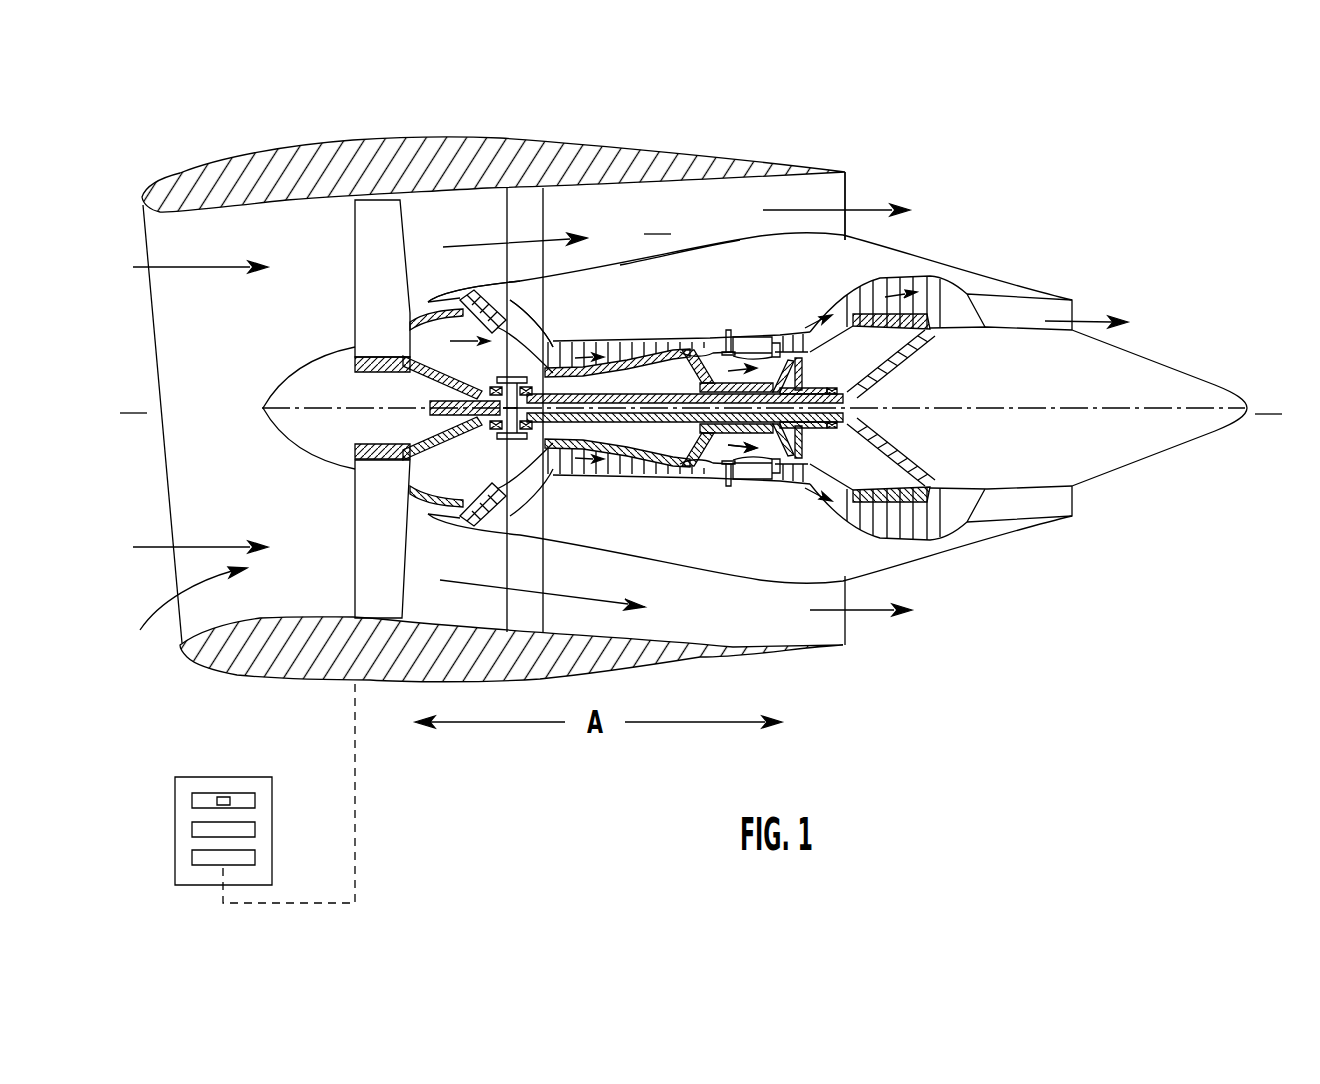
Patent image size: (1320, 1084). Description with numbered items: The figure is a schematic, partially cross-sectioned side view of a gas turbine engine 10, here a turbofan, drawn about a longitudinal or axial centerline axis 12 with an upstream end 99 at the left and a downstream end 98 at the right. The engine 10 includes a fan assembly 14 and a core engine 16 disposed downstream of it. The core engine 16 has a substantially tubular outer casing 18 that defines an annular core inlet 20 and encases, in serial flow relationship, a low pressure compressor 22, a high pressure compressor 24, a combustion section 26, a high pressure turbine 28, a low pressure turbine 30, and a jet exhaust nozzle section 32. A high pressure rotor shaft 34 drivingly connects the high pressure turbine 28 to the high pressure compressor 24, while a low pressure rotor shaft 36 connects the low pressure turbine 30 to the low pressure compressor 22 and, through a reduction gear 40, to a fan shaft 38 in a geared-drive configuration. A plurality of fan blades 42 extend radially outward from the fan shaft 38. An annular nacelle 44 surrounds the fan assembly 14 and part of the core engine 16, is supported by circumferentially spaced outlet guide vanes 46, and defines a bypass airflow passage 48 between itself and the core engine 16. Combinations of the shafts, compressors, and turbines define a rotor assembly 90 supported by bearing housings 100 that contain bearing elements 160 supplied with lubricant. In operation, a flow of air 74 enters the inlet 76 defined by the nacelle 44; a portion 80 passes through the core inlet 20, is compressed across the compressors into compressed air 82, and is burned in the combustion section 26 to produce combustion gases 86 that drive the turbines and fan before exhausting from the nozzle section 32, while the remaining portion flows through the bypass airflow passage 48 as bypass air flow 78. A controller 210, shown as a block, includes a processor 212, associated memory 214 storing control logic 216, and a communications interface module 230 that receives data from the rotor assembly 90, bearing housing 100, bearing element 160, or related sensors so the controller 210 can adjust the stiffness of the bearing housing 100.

The gas turbine engine 10 is at (984, 160).
The axial centerline axis 12 is at (1012, 405).
The fan assembly 14 is at (433, 217).
The core engine 16 is at (740, 237).
The outer casing 18 is at (701, 578).
The annular inlet 20 is at (453, 514).
The low pressure compressor 22 is at (497, 484).
The high pressure compressor 24 is at (575, 470).
The combustion section 26 is at (745, 478).
The high pressure turbine 28 is at (800, 478).
The low pressure turbine 30 is at (934, 547).
The jet exhaust nozzle section 32 is at (996, 522).
The high pressure rotor shaft 34 is at (797, 374).
The low pressure rotor shaft 36 is at (888, 360).
The fan shaft 38 is at (410, 378).
The reduction gear 40 is at (497, 377).
The fan blades 42 is at (370, 237).
The nacelle 44 is at (357, 140).
The outlet guide vanes 46 is at (530, 217).
The bypass airflow passage 48 is at (680, 233).
The flow of air 74 is at (178, 263).
The inlet 76 is at (181, 619).
The bypass air flow 78 is at (495, 240).
The core air flow 80 is at (443, 290).
The compressed air 82 is at (557, 338).
The combustion gases 86 is at (788, 333).
The rotor assembly 90 is at (627, 362).
The downstream end 98 is at (1268, 400).
The upstream end 99 is at (134, 399).
The bearing housing 100 is at (815, 345).
The bearing element 160 is at (490, 437).
The controller 210 is at (250, 780).
The processor 212 is at (250, 830).
The memory 214 is at (250, 802).
The control logic 216 is at (216, 804).
The communications interface module 230 is at (250, 858).